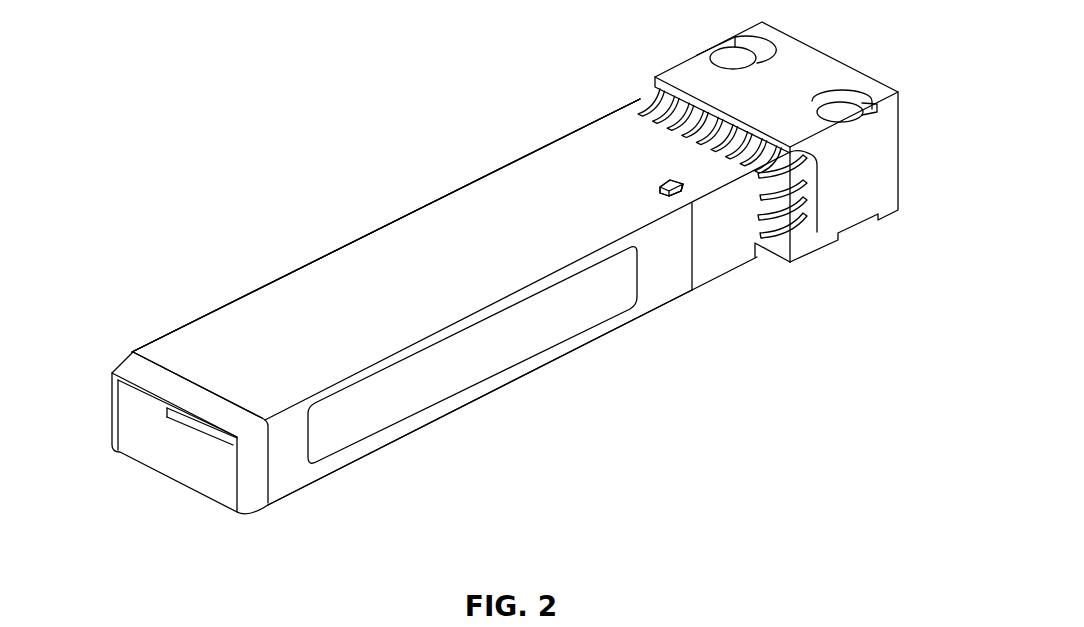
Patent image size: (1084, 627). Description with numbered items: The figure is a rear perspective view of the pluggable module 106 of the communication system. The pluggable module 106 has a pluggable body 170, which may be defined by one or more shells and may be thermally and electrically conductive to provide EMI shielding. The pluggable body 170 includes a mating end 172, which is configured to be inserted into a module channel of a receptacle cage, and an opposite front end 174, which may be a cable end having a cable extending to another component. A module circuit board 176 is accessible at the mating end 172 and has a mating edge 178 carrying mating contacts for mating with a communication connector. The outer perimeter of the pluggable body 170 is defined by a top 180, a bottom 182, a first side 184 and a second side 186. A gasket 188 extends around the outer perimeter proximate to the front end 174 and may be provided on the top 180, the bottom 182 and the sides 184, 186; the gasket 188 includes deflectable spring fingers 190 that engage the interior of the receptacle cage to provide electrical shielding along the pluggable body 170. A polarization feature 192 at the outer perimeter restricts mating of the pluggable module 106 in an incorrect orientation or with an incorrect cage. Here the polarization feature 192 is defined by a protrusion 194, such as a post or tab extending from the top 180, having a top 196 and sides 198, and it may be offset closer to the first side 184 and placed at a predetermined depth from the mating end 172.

The pluggable module 106 is at (354, 134).
The pluggable body 170 is at (498, 193).
The mating end 172 is at (108, 417).
The front end 174 is at (899, 163).
The module circuit board 176 is at (190, 440).
The mating edge 178 is at (225, 443).
The top 180 is at (363, 266).
The bottom 182 is at (388, 440).
The first side 184 is at (520, 343).
The second side 186 is at (292, 272).
The gasket 188 is at (796, 215).
The spring fingers 190 is at (684, 108).
The polarization feature 192 is at (657, 173).
The protrusion 194 is at (662, 194).
The top 196 is at (683, 183).
The sides 198 is at (682, 192).